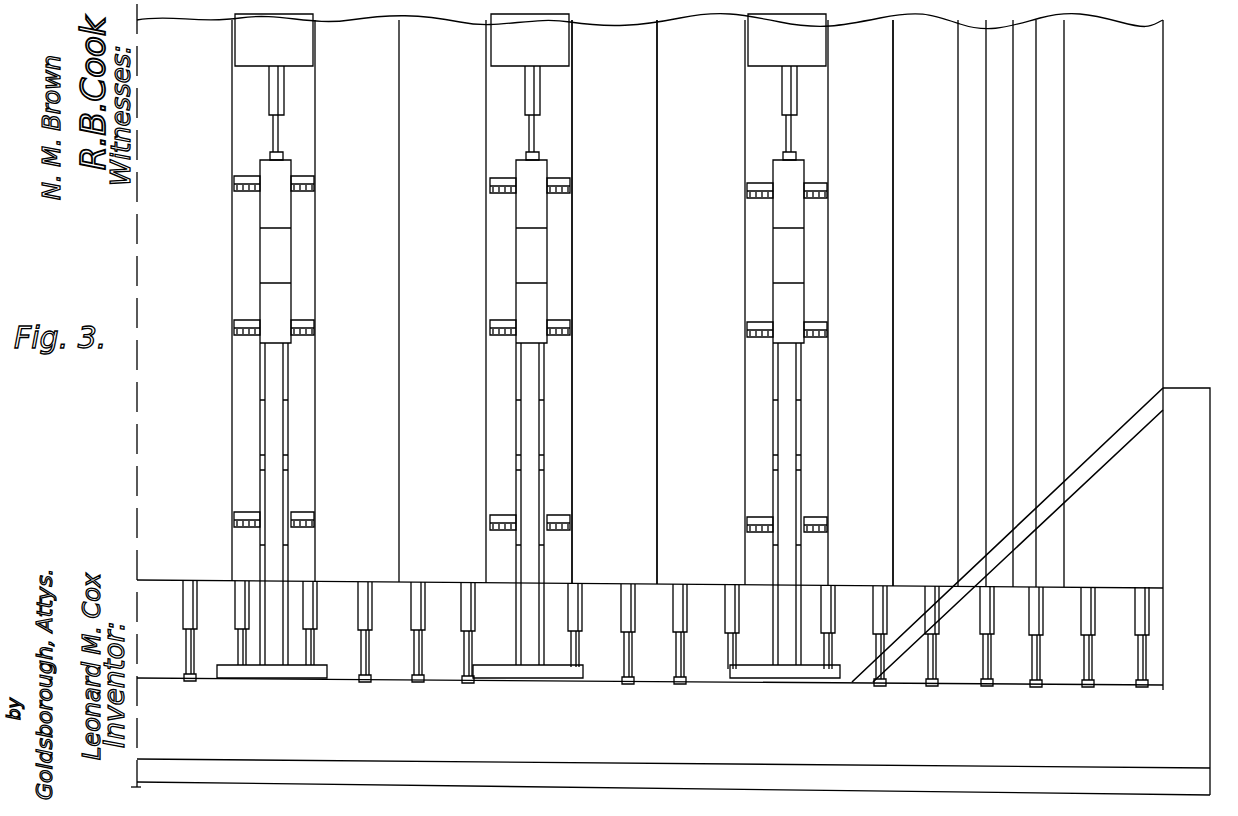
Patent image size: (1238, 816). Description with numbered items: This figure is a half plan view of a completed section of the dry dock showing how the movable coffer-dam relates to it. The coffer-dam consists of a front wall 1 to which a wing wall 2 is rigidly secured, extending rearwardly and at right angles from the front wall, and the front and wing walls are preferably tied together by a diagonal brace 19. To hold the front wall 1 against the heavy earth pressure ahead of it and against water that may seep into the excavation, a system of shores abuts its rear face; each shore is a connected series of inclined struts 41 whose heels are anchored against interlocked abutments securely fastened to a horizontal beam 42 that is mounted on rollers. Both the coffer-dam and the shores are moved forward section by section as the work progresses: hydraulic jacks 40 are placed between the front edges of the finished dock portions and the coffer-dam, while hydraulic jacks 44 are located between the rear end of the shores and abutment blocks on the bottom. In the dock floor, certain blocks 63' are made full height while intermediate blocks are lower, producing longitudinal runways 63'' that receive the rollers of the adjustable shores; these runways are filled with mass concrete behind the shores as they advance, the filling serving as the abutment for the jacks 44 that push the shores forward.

The front wall of the coffer-dam 1 is at (673, 736).
The wing wall 2 is at (1186, 591).
The diagonal brace 19 is at (1070, 487).
The hydraulic jack 40 is at (368, 617).
The inclined strut 41 is at (278, 303).
The horizontal beam 42 is at (300, 182).
The hydraulic jack 44 is at (288, 103).
The full-height block 63' is at (591, 301).
The runway 63'' is at (745, 303).